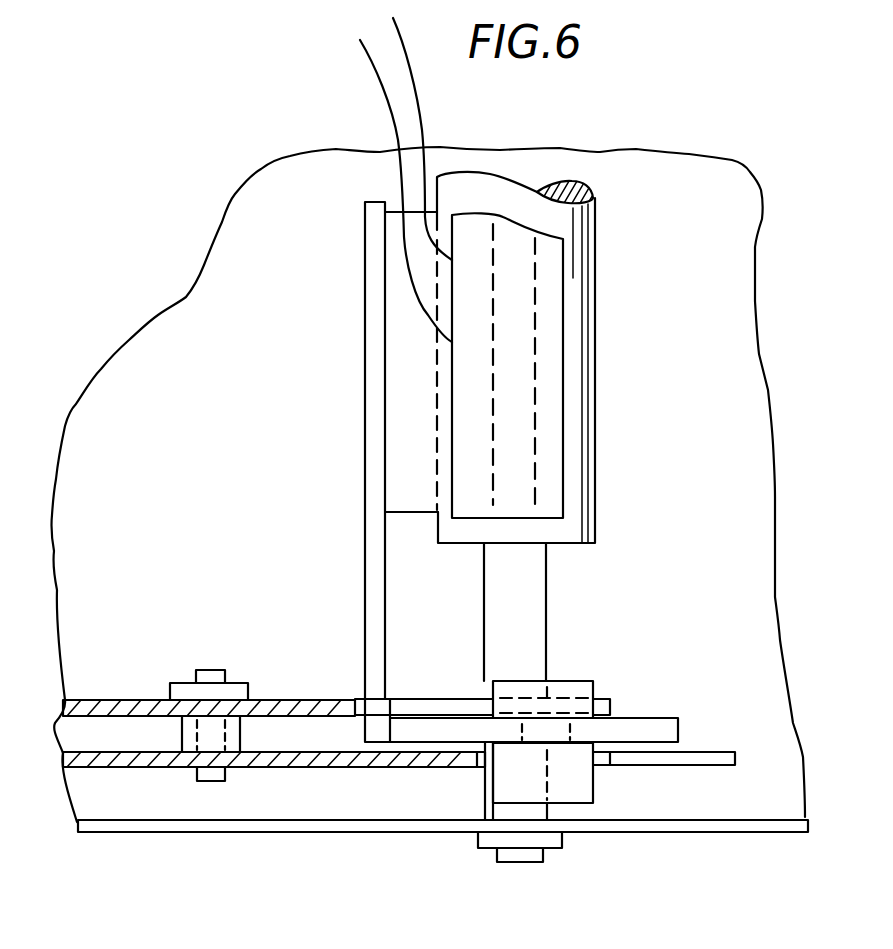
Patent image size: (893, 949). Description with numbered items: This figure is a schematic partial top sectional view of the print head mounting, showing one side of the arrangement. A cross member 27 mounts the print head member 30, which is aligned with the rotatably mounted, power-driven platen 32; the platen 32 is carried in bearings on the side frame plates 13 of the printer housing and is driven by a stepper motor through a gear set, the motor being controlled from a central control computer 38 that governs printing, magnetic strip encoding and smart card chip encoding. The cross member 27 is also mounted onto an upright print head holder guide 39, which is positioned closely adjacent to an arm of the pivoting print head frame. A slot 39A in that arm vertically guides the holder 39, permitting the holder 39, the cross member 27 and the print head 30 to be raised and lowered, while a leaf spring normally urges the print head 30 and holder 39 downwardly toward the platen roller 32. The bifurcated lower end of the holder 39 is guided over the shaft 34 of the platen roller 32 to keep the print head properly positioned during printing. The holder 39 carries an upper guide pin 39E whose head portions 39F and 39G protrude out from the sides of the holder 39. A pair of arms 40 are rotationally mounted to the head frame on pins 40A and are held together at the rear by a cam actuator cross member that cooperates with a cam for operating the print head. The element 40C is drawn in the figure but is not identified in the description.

The base plate 13 is at (253, 835).
The mounting bracket 27 is at (367, 418).
The solenoid coil 30 is at (552, 377).
The solenoid housing 32 is at (588, 452).
The plunger rod 34 is at (546, 571).
The control wires 38 is at (378, 32).
The lever arm 39 is at (667, 725).
The lever plate 39A is at (600, 765).
The pivot bolt 39E is at (593, 680).
The lower block 39F is at (578, 795).
The upper block 39G is at (575, 680).
The support plate 40 is at (297, 700).
The fastener 40A is at (205, 675).
The plate tab 40C is at (438, 712).